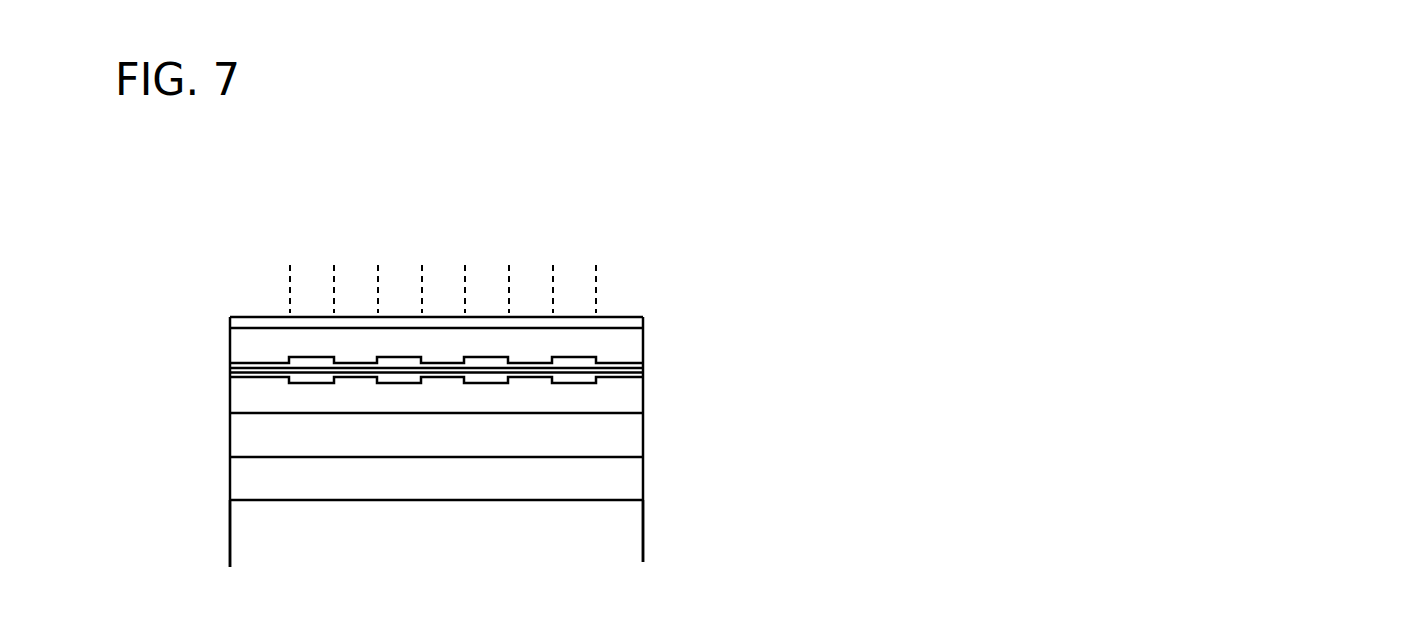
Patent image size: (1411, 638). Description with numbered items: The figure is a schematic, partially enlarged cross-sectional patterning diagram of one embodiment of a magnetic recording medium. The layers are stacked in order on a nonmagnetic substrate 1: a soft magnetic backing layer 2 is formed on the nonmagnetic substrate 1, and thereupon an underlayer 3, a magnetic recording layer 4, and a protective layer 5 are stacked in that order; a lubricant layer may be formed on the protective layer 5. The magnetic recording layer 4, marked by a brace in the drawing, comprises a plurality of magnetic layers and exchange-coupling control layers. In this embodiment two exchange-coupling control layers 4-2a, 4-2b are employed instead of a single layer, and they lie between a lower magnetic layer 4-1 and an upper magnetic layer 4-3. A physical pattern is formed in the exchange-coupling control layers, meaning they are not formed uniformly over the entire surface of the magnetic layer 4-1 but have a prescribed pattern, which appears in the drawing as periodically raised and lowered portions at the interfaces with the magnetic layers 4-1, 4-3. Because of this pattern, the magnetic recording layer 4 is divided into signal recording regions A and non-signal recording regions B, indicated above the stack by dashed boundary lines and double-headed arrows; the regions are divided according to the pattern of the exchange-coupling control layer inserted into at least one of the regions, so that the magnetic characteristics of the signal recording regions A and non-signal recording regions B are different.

The nonmagnetic substrate 1 is at (607, 520).
The soft magnetic backing layer 2 is at (607, 478).
The underlayer 3 is at (607, 438).
The magnetic recording layer 4 is at (813, 337).
The magnetic layer 4-1 is at (608, 397).
The exchange-coupling control layer 4-2a is at (617, 372).
The exchange-coupling control layer 4-2b is at (618, 367).
The magnetic layer 4-3 is at (623, 340).
The protective layer 5 is at (625, 320).
The signal recording region A is at (334, 280).
The non-signal recording region B is at (378, 292).